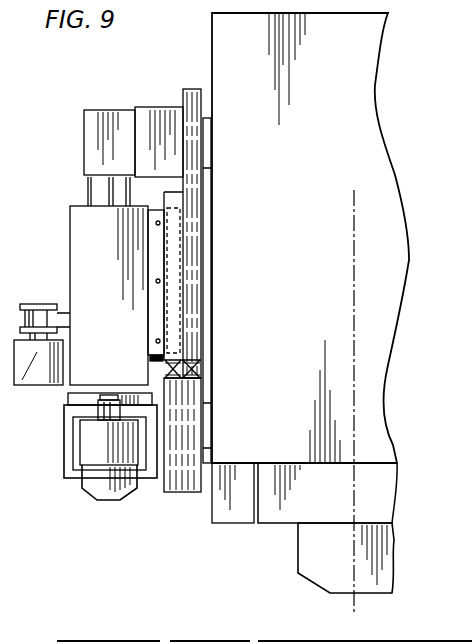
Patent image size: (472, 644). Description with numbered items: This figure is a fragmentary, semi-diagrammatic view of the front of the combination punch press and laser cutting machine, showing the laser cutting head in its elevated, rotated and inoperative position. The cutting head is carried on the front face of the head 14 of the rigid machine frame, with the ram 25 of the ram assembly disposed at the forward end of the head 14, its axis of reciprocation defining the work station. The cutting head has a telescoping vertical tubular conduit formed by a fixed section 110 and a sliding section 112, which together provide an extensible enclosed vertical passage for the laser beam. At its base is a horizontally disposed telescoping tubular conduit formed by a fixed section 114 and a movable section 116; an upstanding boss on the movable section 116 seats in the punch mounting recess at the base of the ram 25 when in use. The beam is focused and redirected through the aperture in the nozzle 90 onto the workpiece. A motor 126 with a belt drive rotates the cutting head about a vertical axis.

The head 14 is at (358, 155).
The ram 25 is at (310, 555).
The nozzle 90 is at (105, 480).
The fixed section 110 is at (84, 190).
The sliding section 112 is at (70, 262).
The fixed section 114 is at (65, 470).
The movable section 116 is at (95, 440).
The motor 126 is at (13, 387).